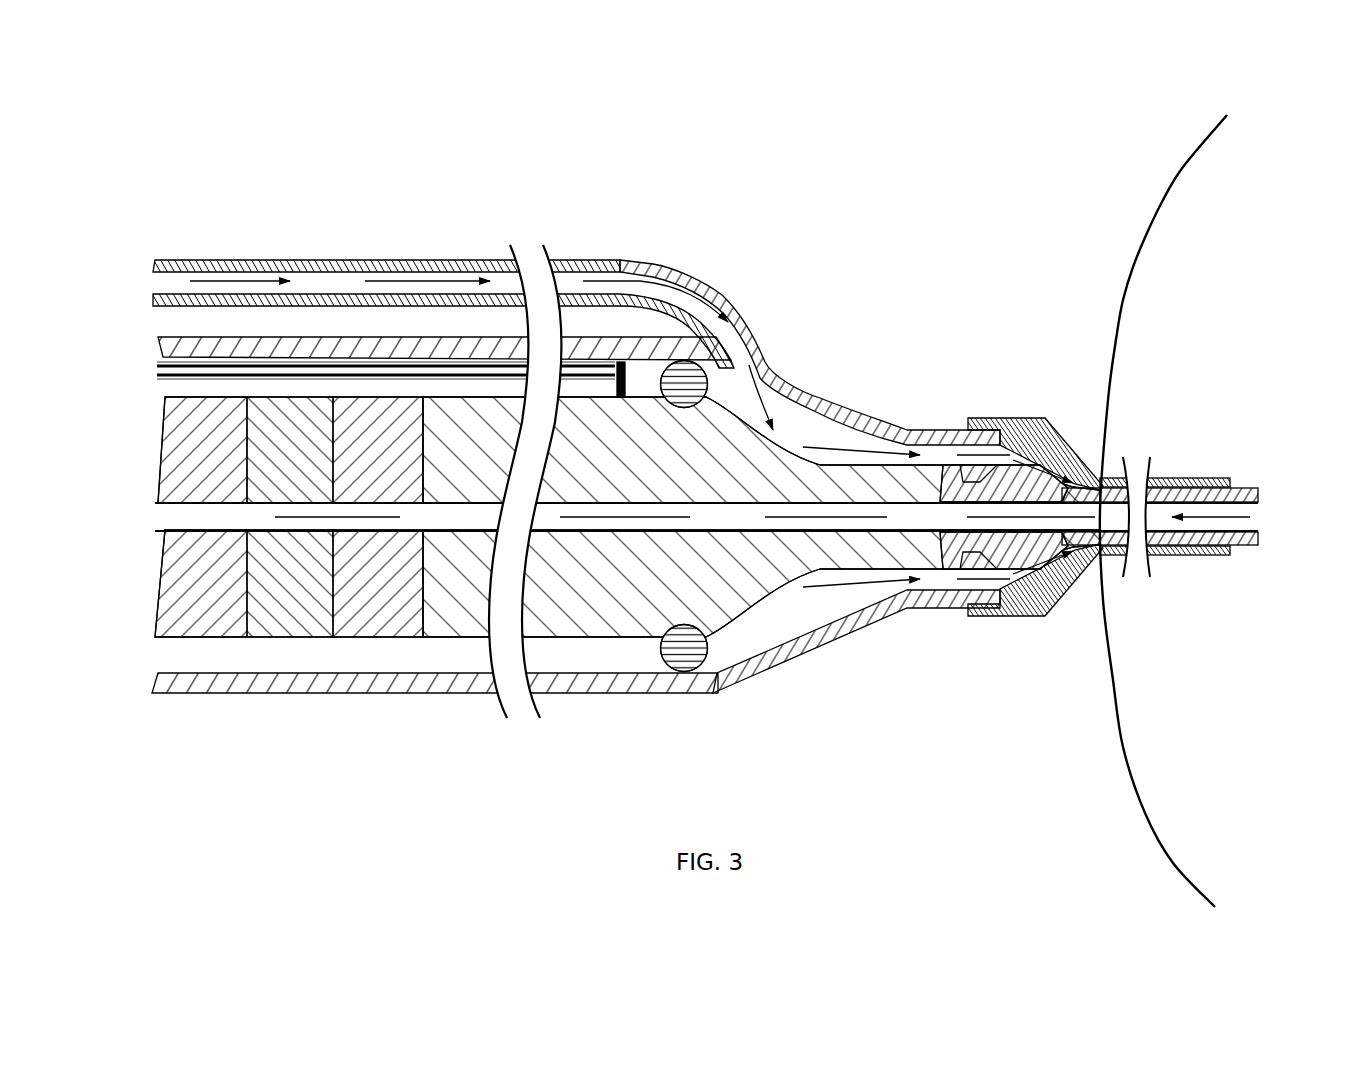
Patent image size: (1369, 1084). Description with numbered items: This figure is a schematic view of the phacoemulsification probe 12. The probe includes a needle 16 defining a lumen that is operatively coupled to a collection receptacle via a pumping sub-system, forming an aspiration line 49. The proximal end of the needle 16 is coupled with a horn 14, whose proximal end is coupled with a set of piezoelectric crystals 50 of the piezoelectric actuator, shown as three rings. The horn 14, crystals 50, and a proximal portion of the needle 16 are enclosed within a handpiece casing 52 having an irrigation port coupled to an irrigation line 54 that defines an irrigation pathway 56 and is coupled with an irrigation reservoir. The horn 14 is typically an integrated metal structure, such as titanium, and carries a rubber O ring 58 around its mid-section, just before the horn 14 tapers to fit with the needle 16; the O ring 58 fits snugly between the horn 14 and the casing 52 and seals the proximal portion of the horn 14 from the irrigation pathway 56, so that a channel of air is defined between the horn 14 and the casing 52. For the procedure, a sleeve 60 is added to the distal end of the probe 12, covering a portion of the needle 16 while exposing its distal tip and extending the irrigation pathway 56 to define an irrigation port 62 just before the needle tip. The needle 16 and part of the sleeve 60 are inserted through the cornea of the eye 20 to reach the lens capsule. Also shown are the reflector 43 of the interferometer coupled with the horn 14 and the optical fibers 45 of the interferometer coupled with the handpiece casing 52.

The phacoemulsification probe 12 is at (826, 121).
The horn 14 is at (570, 633).
The needle 16 is at (1243, 488).
The eye 20 is at (1148, 232).
The reflector 43 is at (620, 362).
The optical fiber(s) 45 is at (158, 372).
The aspiration line 49 is at (1262, 517).
The piezoelectric crystals 50 is at (217, 393).
The handpiece casing 52 is at (396, 262).
The irrigation line 54 is at (820, 410).
The irrigation pathway 56 is at (507, 280).
The O ring 58 is at (708, 653).
The sleeve 60 is at (1010, 415).
The irrigation port 62 is at (1262, 551).